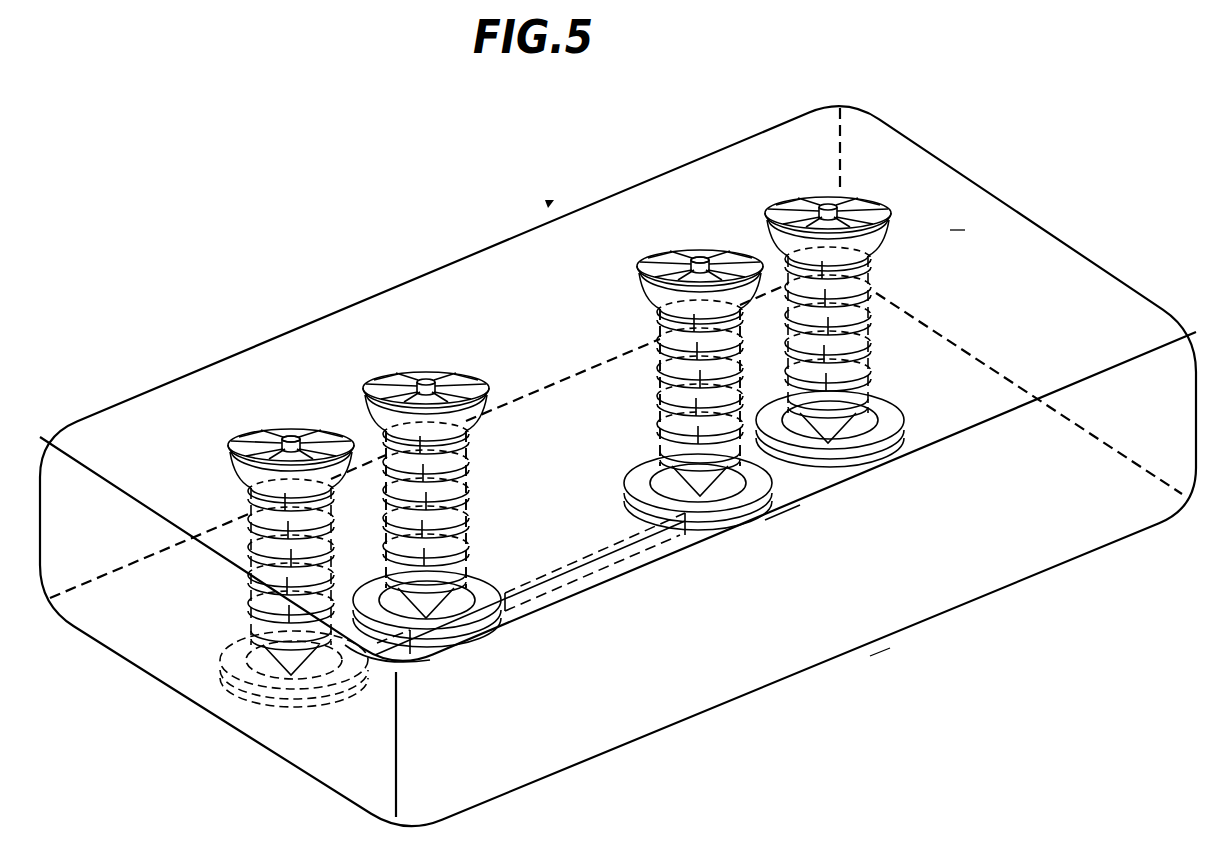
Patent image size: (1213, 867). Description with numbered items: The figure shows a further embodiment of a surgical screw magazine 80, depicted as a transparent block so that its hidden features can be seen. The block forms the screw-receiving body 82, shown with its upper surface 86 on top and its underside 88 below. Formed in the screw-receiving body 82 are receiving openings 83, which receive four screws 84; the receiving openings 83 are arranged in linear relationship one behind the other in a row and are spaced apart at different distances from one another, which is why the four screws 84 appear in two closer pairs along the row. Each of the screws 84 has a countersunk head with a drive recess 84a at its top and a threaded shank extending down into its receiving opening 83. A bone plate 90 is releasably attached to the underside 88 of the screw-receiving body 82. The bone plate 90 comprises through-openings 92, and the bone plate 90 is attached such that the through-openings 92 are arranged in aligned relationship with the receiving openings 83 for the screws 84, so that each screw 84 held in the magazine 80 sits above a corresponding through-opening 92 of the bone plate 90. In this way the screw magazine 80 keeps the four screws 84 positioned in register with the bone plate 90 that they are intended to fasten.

The surgical screw magazine 80 is at (550, 196).
The screw-receiving body 82 is at (181, 361).
The receiving openings 83 is at (660, 410).
The screws 84 is at (281, 421).
The screw head recess 84a is at (313, 440).
The top face of housing 86 is at (960, 225).
The underside 88 is at (880, 654).
The bone plate 90 is at (533, 567).
The through-openings 92 is at (688, 517).